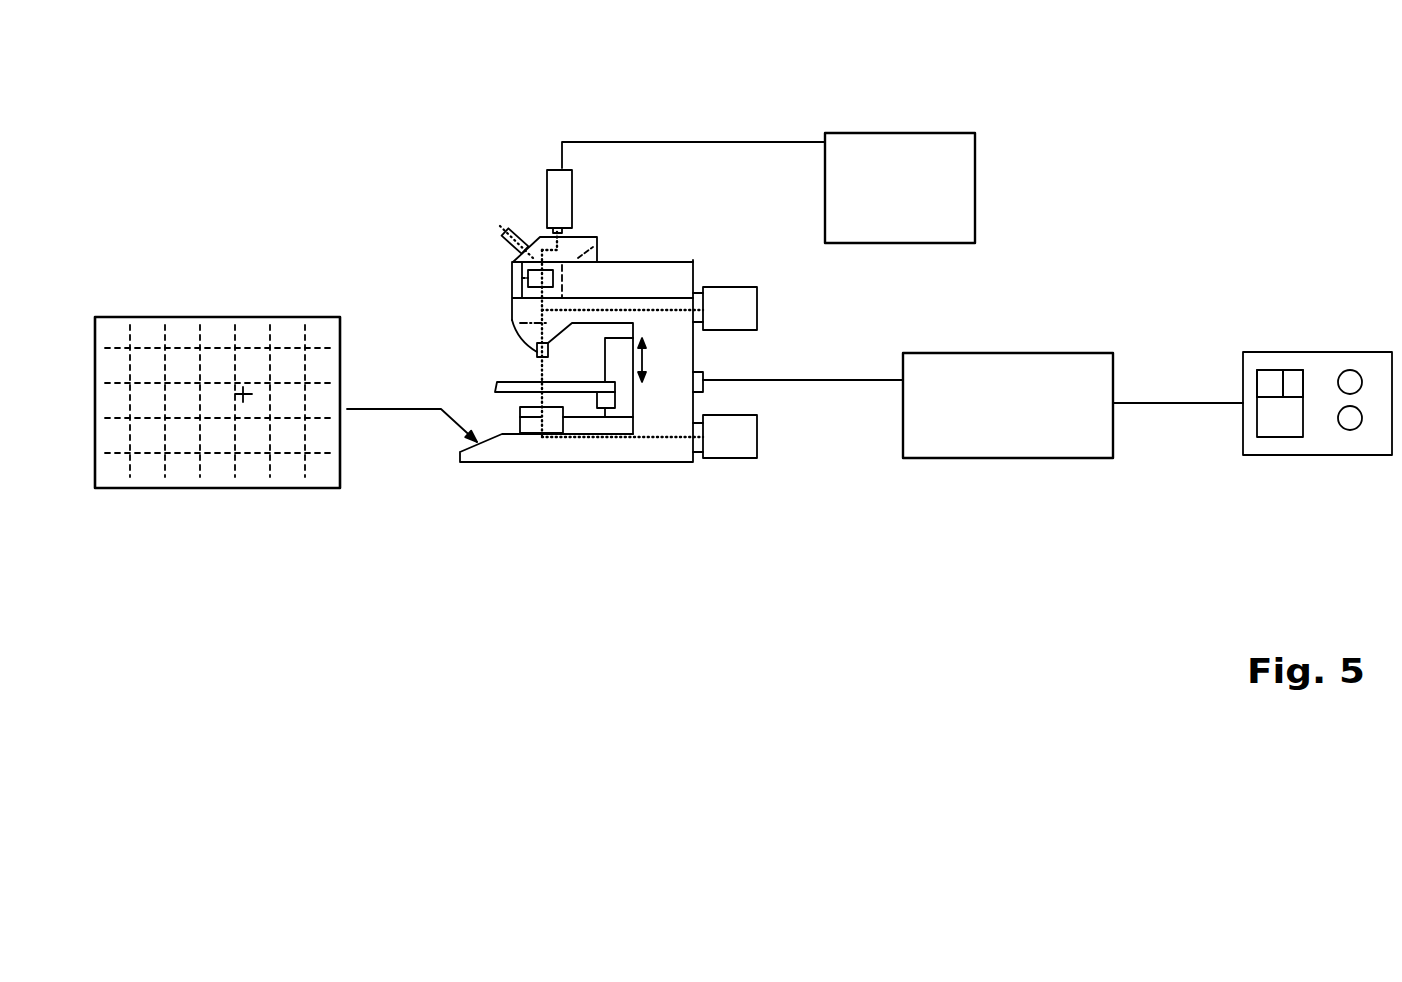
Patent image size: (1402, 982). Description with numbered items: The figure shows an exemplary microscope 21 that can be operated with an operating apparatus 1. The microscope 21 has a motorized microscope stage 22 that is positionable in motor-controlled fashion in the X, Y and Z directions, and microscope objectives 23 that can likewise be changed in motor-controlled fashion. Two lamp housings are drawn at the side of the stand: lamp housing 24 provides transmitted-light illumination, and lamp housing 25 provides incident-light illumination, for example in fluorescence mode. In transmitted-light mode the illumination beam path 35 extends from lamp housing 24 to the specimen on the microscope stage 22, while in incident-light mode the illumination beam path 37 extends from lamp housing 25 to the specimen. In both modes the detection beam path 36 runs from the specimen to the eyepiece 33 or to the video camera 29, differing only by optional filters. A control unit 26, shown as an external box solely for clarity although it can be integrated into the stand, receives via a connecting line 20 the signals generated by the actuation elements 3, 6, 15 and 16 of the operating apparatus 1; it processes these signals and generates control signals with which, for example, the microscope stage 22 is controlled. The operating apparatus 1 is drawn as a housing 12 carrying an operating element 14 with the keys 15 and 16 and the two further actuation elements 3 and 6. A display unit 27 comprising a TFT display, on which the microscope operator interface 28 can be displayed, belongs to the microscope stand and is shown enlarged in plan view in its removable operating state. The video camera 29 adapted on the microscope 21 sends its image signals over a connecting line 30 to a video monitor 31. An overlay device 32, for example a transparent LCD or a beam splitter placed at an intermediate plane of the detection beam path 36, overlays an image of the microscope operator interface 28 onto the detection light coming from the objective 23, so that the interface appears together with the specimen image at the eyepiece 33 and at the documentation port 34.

The operating apparatus 1 is at (1307, 414).
The actuation element 3 is at (1350, 426).
The actuation element 6 is at (1347, 377).
The housing 12 is at (1307, 432).
The operating element 14 is at (1280, 409).
The actuation element 15 is at (1270, 378).
The actuation element 16 is at (1293, 378).
The connecting line 20 is at (1145, 402).
The microscope 21 is at (545, 385).
The motorized microscope stage 22 is at (495, 384).
The microscope objective 23 is at (527, 350).
The lamp housing 24 is at (743, 443).
The lamp housing 25 is at (743, 318).
The control unit 26 is at (1032, 425).
The display unit 27 is at (283, 312).
The microscope operator interface 28 is at (215, 416).
The video camera 29 is at (547, 185).
The connecting line 30 is at (675, 141).
The video monitor 31 is at (921, 204).
The overlay device 32 is at (510, 280).
The eyepiece 33 is at (508, 263).
The documentation port 34 is at (568, 235).
The illumination beam path 35 is at (520, 418).
The detection beam path 36 is at (537, 232).
The illumination beam path 37 is at (663, 307).